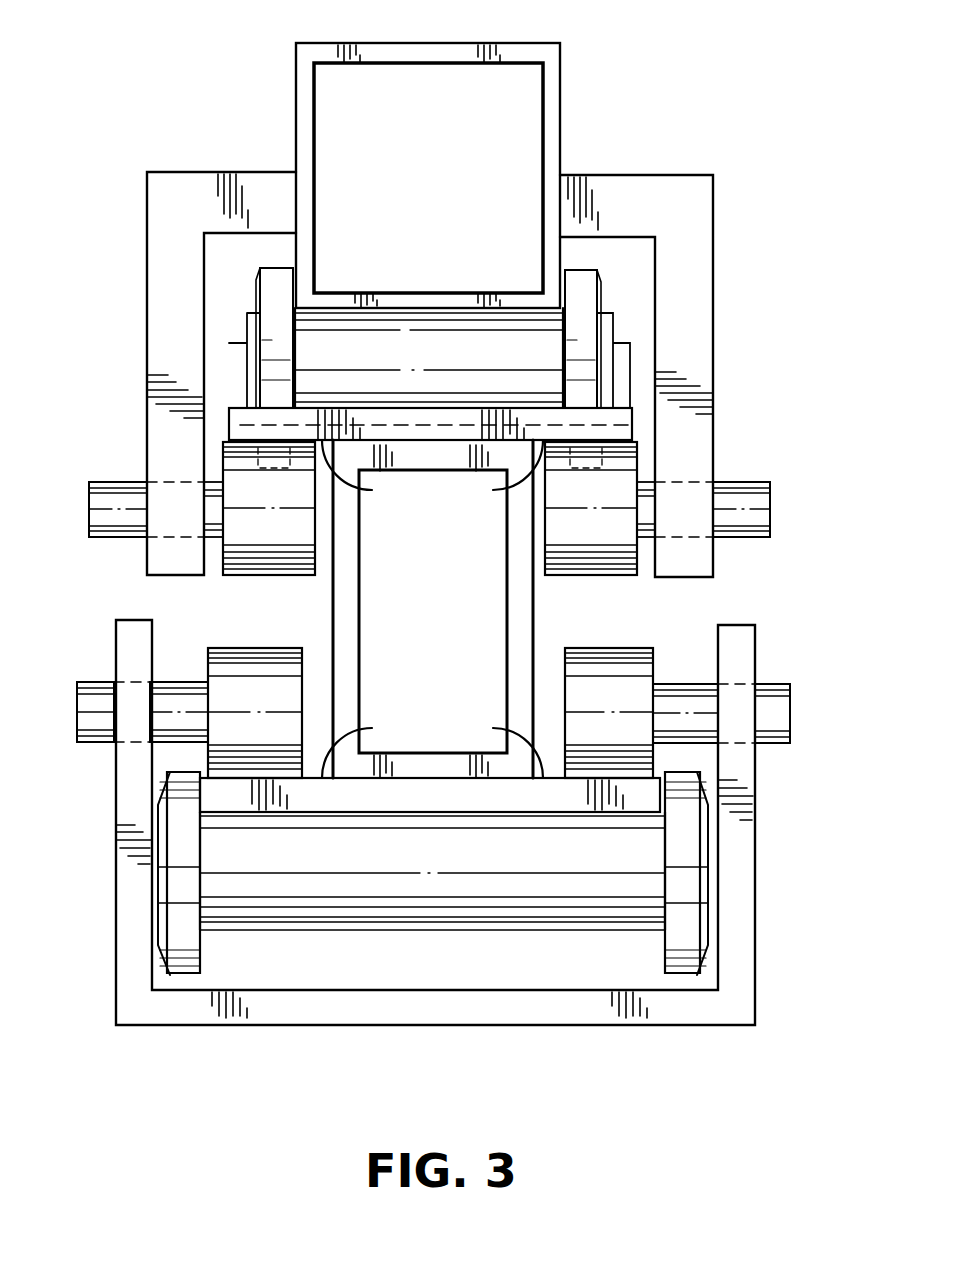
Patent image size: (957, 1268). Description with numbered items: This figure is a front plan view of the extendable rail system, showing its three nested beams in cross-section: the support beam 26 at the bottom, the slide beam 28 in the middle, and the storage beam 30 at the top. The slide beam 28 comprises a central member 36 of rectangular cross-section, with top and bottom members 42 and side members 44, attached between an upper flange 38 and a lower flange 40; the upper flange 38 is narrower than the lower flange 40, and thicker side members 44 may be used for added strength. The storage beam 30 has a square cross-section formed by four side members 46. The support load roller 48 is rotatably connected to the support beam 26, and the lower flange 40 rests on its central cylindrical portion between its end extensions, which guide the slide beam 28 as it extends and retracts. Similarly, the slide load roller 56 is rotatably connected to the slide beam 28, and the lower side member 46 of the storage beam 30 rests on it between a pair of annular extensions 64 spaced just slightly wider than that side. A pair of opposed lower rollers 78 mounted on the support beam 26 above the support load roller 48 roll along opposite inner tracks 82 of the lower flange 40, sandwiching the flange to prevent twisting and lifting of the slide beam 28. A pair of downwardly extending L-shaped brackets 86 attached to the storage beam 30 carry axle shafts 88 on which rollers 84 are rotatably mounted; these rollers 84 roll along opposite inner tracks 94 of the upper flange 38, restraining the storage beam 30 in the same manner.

The support beam 26 is at (757, 832).
The slide beam 28 is at (560, 606).
The storage beam 30 is at (560, 133).
The central member 36 is at (306, 608).
The upper flange 38 is at (230, 423).
The lower flange 40 is at (223, 800).
The top and bottom members 42 is at (440, 472).
The side members 44 is at (359, 592).
The side members 46 is at (452, 43).
The support load roller 48 is at (330, 932).
The slide load roller 56 is at (307, 350).
The annular extensions 64 is at (273, 291).
The lower rollers 78 is at (216, 648).
The inner tracks 82 is at (343, 718).
The rollers 84 is at (238, 578).
The L-shaped brackets 86 is at (183, 172).
The axle shaft 88 is at (89, 509).
The inner tracks 94 is at (504, 492).